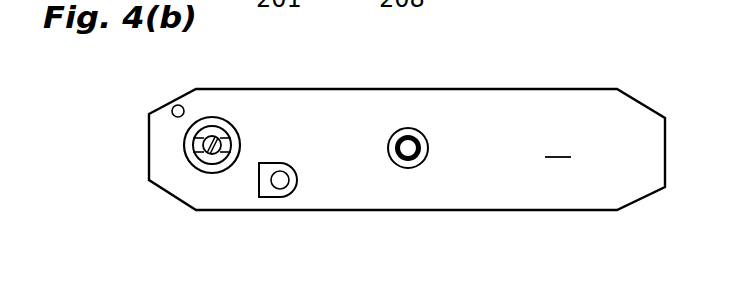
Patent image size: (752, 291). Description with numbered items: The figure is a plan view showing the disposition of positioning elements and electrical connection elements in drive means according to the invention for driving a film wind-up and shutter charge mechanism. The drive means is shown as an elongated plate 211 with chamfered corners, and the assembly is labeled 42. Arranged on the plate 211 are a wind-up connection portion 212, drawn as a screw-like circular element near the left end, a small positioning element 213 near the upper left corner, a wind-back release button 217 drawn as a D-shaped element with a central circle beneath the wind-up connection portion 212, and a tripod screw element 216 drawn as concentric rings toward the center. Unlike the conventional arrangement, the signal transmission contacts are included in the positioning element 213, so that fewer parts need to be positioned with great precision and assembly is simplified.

The mounting plate 211 is at (524, 92).
The plate assembly 42 is at (557, 143).
The positioning element 213 is at (179, 105).
The wind-up connection portion 212 is at (223, 122).
The wind-back release button 217 is at (280, 182).
The tripod screw element 216 is at (408, 150).